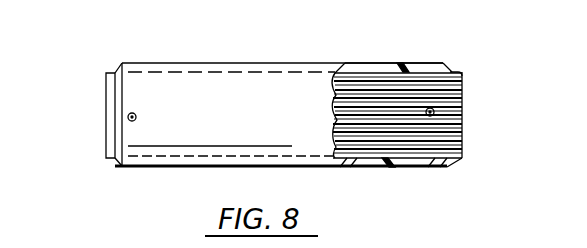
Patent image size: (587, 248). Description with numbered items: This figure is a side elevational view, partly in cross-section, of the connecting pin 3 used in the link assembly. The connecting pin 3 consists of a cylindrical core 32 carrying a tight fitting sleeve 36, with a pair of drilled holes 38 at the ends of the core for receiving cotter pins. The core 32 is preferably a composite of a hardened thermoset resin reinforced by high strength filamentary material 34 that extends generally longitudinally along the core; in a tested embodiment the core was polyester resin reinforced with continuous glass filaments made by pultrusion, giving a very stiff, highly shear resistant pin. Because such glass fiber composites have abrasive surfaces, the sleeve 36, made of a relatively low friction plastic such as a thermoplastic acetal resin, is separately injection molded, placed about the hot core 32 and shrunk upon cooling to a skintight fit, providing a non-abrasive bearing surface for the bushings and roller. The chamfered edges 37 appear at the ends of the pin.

The connecting pin 3 is at (250, 31).
The cylindrical core 32 is at (106, 99).
The high strength filamentary material 34 is at (460, 147).
The tight fitting sleeve 36 is at (352, 72).
The chamfered edge 37 is at (118, 67).
The drilled holes 38 is at (128, 118).